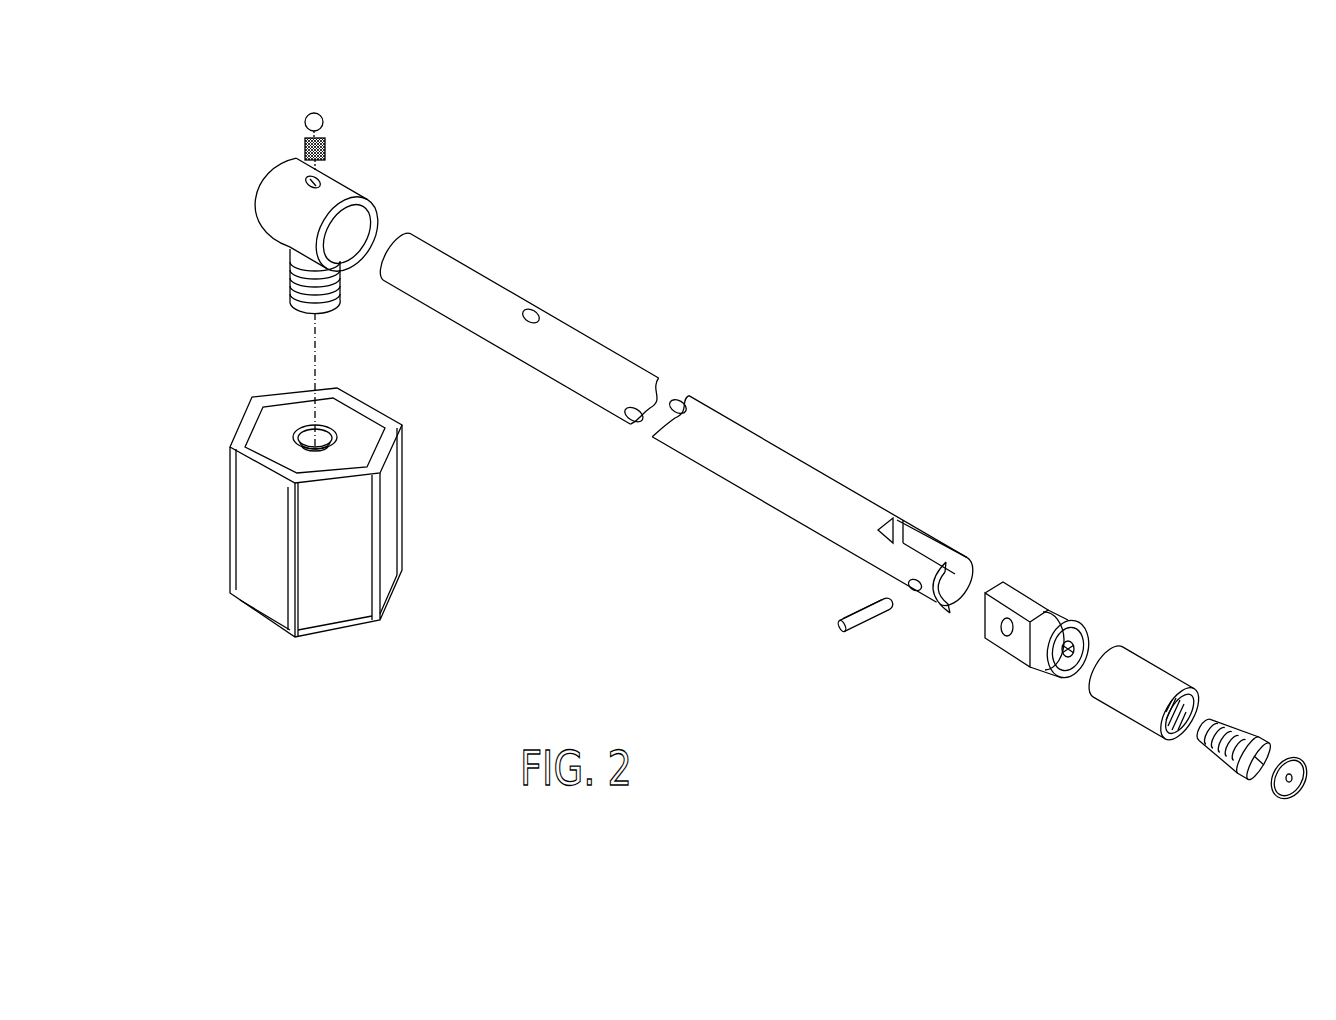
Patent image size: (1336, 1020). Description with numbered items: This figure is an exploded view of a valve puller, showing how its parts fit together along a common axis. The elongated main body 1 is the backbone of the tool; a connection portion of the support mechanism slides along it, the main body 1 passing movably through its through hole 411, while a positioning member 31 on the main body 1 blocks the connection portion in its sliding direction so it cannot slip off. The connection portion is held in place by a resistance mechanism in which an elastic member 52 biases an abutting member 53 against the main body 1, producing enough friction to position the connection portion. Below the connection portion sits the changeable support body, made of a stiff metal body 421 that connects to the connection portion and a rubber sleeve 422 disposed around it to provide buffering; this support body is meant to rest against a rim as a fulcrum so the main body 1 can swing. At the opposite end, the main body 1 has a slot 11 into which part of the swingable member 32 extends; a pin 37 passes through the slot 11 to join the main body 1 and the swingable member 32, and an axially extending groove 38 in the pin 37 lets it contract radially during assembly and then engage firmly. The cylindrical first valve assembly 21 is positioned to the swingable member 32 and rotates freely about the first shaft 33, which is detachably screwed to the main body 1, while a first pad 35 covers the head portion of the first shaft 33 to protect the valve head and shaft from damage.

The main body 1 is at (587, 350).
The slot 11 is at (932, 550).
The first valve assembly 21 is at (1162, 682).
The positioning member 31 is at (537, 312).
The swingable member 32 is at (1045, 608).
The first shaft 33 is at (1262, 753).
The first pad 35 is at (1300, 760).
The pin 37 is at (868, 620).
The groove 38 is at (855, 608).
The through hole 411 is at (357, 218).
The metal body 421 is at (268, 436).
The rubber sleeve 422 is at (247, 575).
The elastic member 52 is at (325, 142).
The abutting member 53 is at (320, 114).